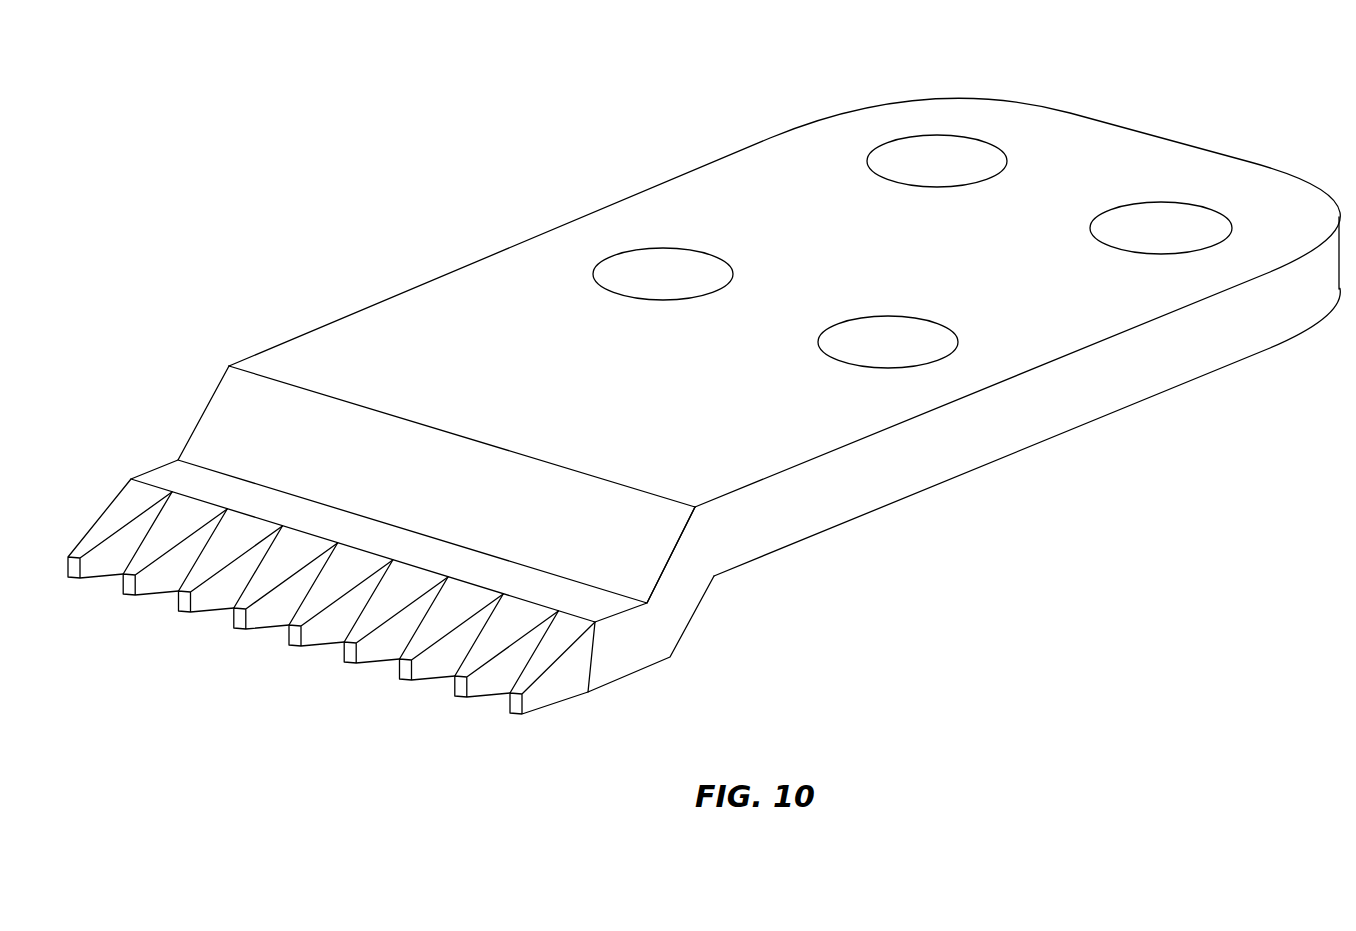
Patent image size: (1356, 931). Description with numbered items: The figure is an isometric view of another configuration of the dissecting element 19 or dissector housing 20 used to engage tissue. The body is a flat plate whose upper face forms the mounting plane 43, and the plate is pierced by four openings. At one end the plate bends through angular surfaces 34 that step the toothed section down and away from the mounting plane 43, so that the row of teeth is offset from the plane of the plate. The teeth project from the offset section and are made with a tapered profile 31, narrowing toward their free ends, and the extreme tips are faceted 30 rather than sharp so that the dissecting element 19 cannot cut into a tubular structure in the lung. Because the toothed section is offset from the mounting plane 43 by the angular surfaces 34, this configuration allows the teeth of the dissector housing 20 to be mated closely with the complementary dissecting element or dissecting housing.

The dissecting element 19 is at (704, 427).
The dissector housing 20 is at (704, 427).
The faceted tip 30 is at (358, 617).
The tapered profile 31 is at (545, 653).
The chamfered face 34 is at (617, 553).
The mounting plane 43 is at (1027, 338).